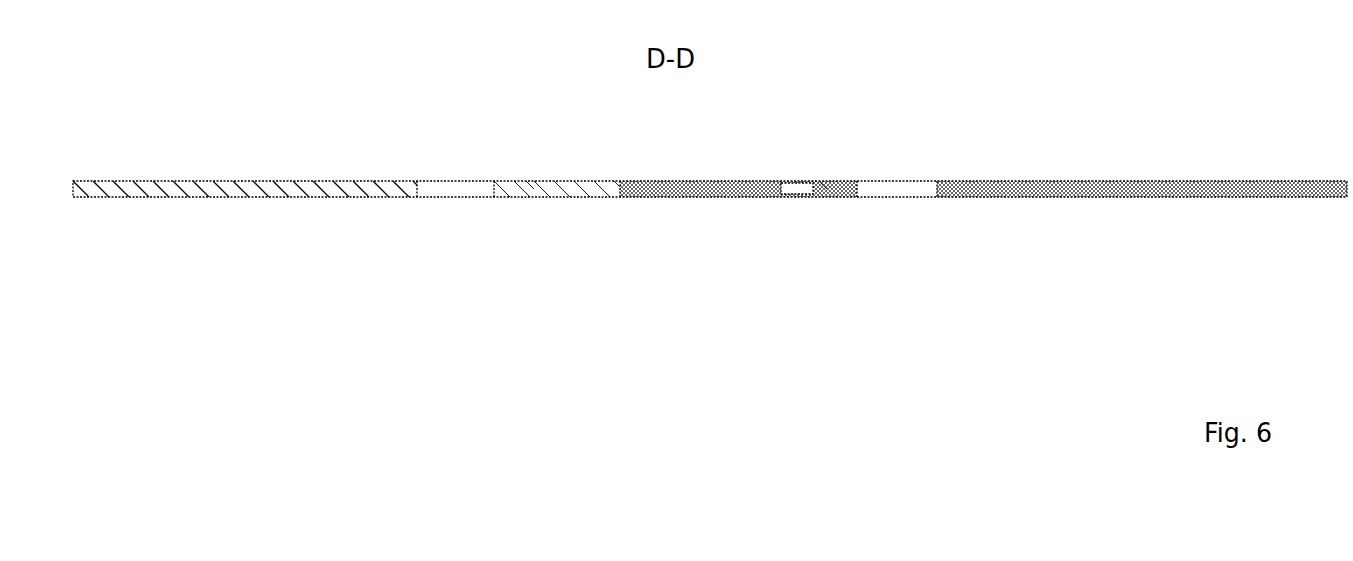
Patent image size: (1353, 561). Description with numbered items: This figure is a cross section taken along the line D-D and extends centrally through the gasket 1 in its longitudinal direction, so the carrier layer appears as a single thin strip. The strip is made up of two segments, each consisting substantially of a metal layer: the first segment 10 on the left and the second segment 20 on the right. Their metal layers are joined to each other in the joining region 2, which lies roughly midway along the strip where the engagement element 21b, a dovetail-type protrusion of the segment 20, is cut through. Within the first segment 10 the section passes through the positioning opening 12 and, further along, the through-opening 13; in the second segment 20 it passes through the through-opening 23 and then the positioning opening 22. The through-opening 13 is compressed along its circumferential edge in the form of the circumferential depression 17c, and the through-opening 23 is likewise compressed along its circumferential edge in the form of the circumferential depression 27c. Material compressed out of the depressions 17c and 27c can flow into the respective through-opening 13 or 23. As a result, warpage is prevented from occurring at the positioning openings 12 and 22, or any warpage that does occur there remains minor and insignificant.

The gasket 1 is at (1033, 108).
The joining region 2 is at (706, 187).
The first segment 10 is at (221, 197).
The positioning opening 12 is at (438, 197).
The through-opening 13 is at (555, 197).
The circumferential depression 17c is at (530, 182).
The second segment 20 is at (1078, 197).
The engagement element 21b is at (673, 197).
The positioning opening 22 is at (880, 197).
The through-opening 23 is at (800, 197).
The circumferential depression 27c is at (823, 182).